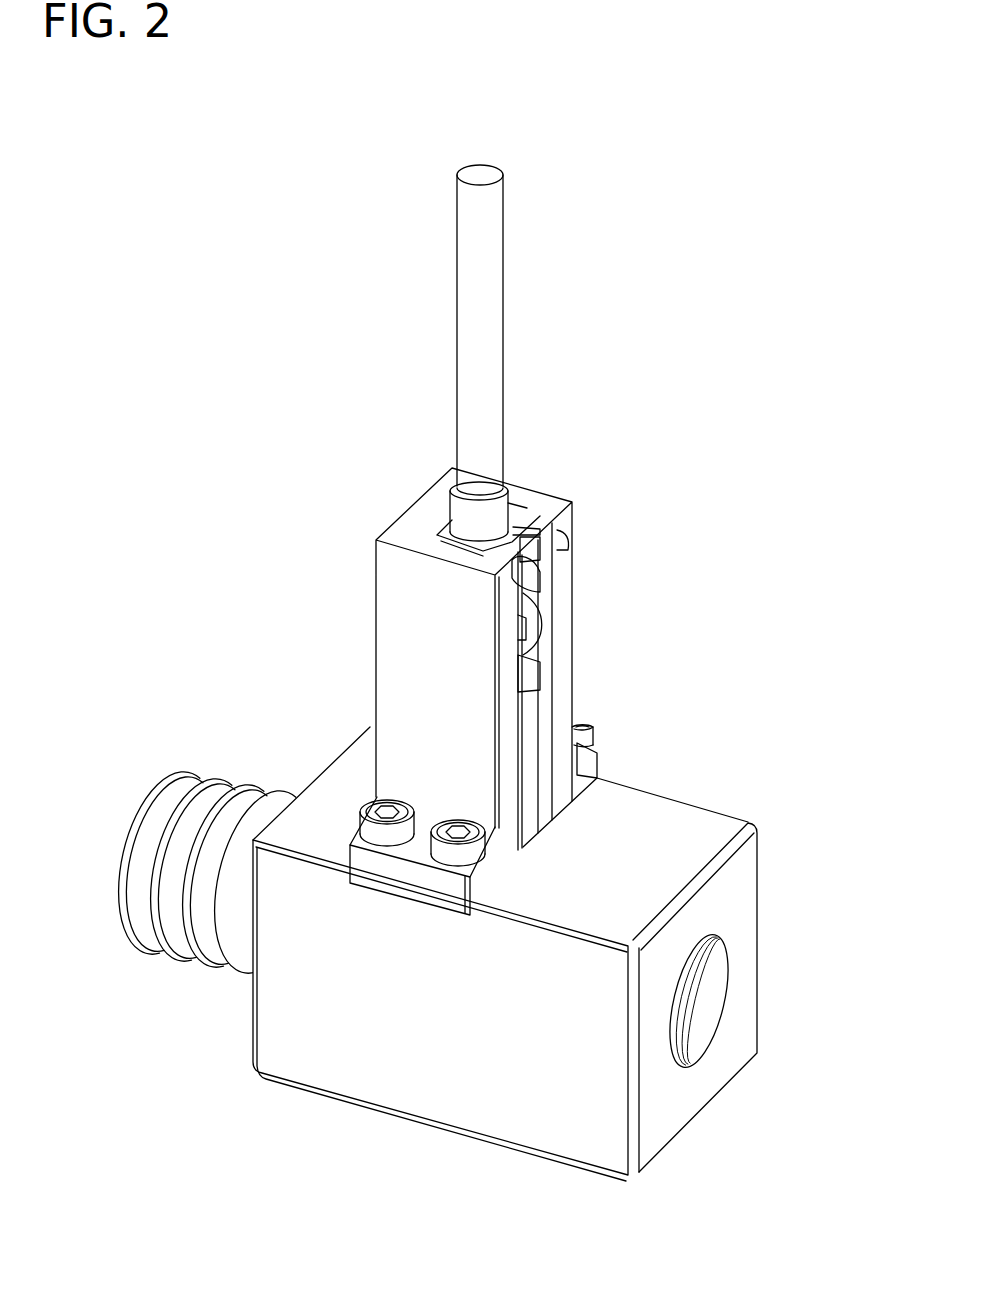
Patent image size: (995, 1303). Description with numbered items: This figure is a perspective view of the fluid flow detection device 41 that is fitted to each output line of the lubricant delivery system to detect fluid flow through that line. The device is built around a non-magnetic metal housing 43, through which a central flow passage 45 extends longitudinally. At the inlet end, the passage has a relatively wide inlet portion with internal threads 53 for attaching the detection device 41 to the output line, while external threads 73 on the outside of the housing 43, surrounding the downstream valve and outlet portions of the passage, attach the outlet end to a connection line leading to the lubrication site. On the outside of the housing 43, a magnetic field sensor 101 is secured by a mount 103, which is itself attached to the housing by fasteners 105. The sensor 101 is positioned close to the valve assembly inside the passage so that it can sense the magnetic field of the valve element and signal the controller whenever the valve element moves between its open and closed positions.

The fluid flow detection device 41 is at (203, 210).
The housing 43 is at (740, 802).
The central flow passage 45 is at (702, 995).
The internal threads 53 is at (698, 1040).
The external threads 73 is at (183, 950).
The magnetic field sensor 101 is at (532, 710).
The mount 103 is at (420, 650).
The fasteners 105 is at (428, 1010).